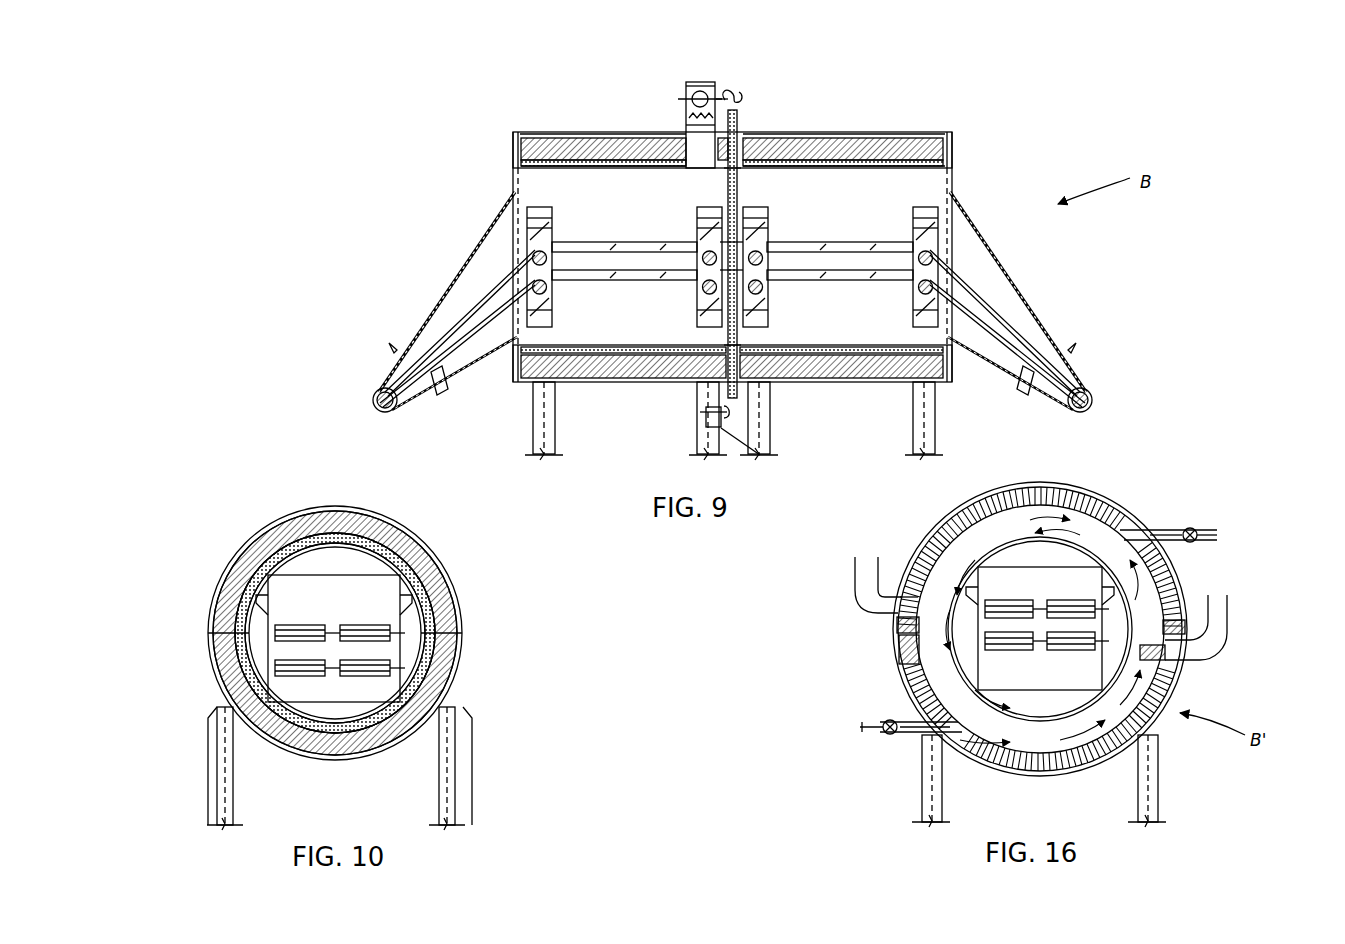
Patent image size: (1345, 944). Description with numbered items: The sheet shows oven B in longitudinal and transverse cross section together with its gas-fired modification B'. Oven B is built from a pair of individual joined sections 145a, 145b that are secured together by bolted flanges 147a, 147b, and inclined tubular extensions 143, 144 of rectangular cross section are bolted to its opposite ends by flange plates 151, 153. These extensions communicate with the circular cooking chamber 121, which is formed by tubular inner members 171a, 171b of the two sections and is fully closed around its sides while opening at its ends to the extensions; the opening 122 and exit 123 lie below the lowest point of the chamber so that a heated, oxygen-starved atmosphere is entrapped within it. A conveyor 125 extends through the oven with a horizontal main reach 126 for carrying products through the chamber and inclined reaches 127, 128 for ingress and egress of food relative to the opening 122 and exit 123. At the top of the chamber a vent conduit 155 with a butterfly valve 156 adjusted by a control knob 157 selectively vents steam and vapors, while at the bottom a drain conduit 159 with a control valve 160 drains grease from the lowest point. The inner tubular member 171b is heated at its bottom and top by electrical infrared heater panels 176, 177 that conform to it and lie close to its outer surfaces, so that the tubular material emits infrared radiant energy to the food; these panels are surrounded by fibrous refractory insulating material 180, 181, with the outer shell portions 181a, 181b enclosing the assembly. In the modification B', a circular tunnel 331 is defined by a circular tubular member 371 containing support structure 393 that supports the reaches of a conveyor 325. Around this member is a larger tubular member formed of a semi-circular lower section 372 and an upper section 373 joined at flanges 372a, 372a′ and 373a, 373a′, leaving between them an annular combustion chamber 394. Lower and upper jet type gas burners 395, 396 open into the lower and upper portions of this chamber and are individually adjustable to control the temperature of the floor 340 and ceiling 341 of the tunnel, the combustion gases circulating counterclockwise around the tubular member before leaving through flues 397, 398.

In FIG. 9, the cooking chamber 121 is at (607, 292).
In FIG. 10, the cooking chamber 121 is at (335, 638).
In FIG. 9, the opening 122 is at (373, 344).
In FIG. 9, the exit 123 is at (1085, 350).
In FIG. 9, the conveyor 125 is at (588, 382).
In FIG. 9, the horizontal main reach 126 is at (650, 248).
In FIG. 9, the inclined reach 127 is at (440, 330).
In FIG. 9, the inclined reach 128 is at (1015, 317).
In FIG. 9, the inclined tubular extension 143 is at (443, 298).
In FIG. 9, the inclined tubular extension 144 is at (1012, 297).
In FIG. 9, the oven section 145a is at (586, 125).
In FIG. 9, the oven section 145b is at (890, 122).
In FIG. 10, the oven section 145b is at (408, 518).
In FIG. 9, the flange 147a is at (722, 100).
In FIG. 9, the flange 147b is at (740, 114).
In FIG. 9, the flange plate 151 is at (513, 143).
In FIG. 9, the flange plate 153 is at (955, 146).
In FIG. 9, the vent conduit 155 is at (686, 92).
In FIG. 9, the butterfly valve 156 is at (703, 91).
In FIG. 9, the control knob 157 is at (738, 95).
In FIG. 9, the drain conduit 159 is at (760, 440).
In FIG. 9, the control valve 160 is at (726, 414).
In FIG. 9, the tubular inner member 171a is at (532, 166).
In FIG. 9, the tubular inner member 171b is at (935, 172).
In FIG. 10, the tubular inner member 171b is at (252, 575).
In FIG. 9, the electrical infrared heater panel 176 is at (808, 382).
In FIG. 10, the electrical infrared heater panel 176 is at (318, 742).
In FIG. 9, the electrical infrared heater panel 177 is at (845, 163).
In FIG. 10, the electrical infrared heater panel 177 is at (262, 560).
In FIG. 9, the thermal insulating material 180 is at (836, 142).
In FIG. 10, the thermal insulating material 180 is at (252, 540).
In FIG. 9, the thermal insulating material 181 is at (795, 382).
In FIG. 10, the thermal insulating material 181 is at (340, 748).
In FIG. 9, the left shell 181a is at (532, 138).
In FIG. 9, the right shell 181b is at (915, 134).
In FIG. 10, the right shell 181b is at (265, 527).
In FIG. 16, the conveyor 325 is at (1062, 620).
In FIG. 16, the tunnel 331 is at (1040, 628).
In FIG. 16, the floor 340 is at (1036, 712).
In FIG. 16, the ceiling 341 is at (1018, 548).
In FIG. 16, the circular tubular member 371 is at (1125, 668).
In FIG. 16, the semi-circular lower section 372 is at (1010, 750).
In FIG. 16, the flange 372a is at (1172, 652).
In FIG. 16, the flange 372a′ is at (899, 648).
In FIG. 16, the upper section 373 is at (1068, 492).
In FIG. 16, the flange 373a is at (1178, 620).
In FIG. 16, the flange 373a′ is at (897, 624).
In FIG. 16, the support structure 393 is at (1108, 648).
In FIG. 16, the annular combustion chamber 394 is at (1072, 512).
In FIG. 16, the lower gas burner 395 is at (880, 740).
In FIG. 16, the upper gas burner 396 is at (1185, 525).
In FIG. 16, the flue 397 is at (1228, 600).
In FIG. 16, the flue 398 is at (855, 585).